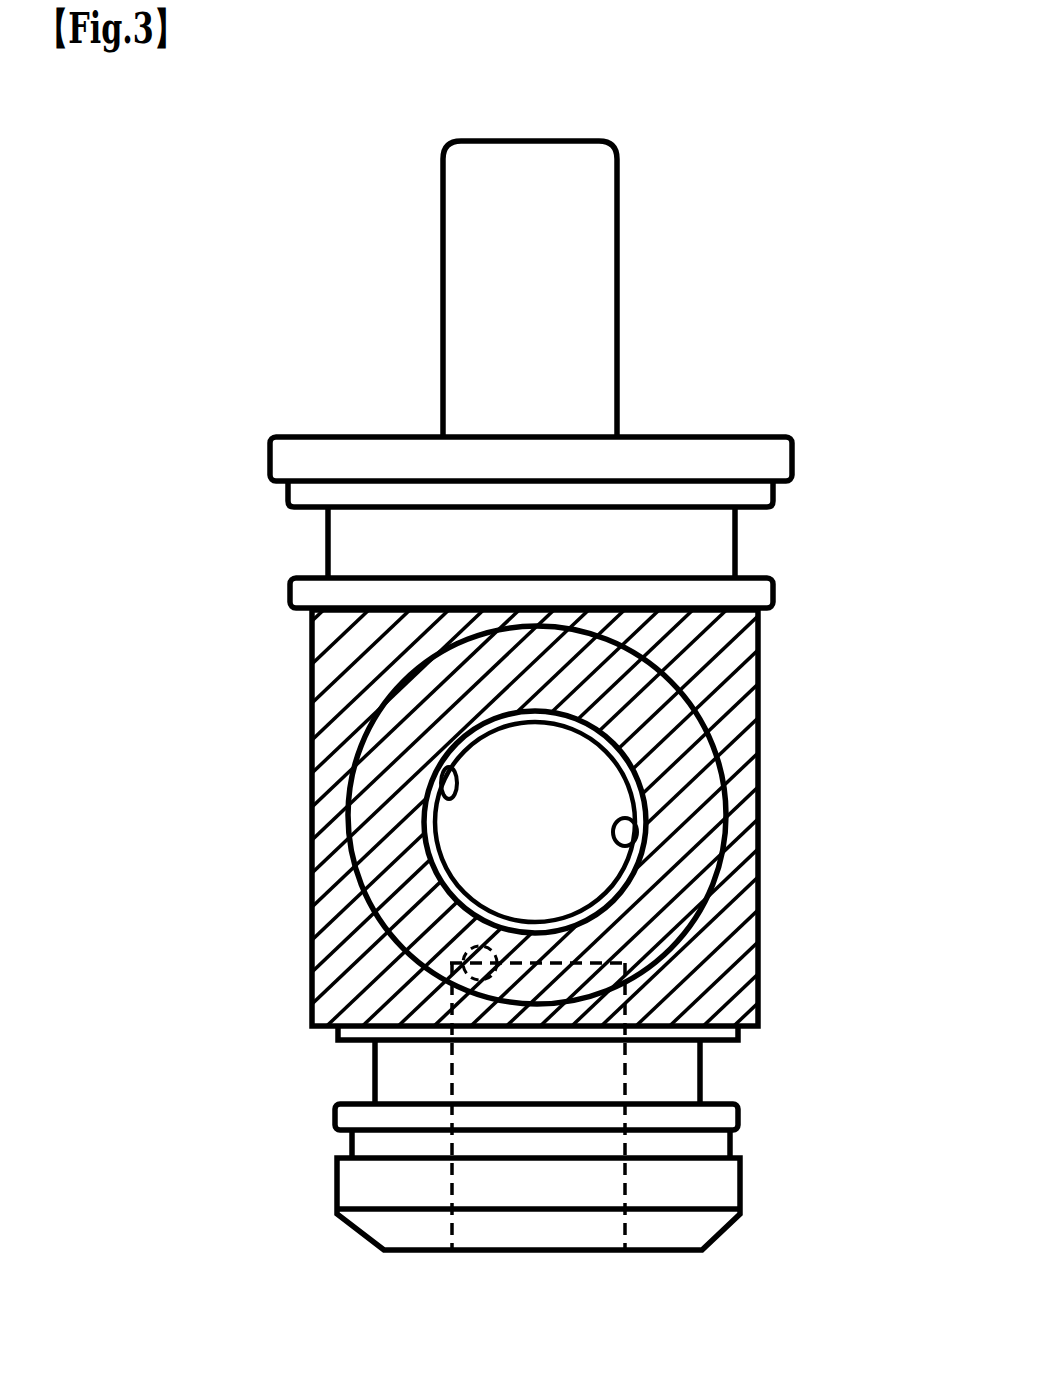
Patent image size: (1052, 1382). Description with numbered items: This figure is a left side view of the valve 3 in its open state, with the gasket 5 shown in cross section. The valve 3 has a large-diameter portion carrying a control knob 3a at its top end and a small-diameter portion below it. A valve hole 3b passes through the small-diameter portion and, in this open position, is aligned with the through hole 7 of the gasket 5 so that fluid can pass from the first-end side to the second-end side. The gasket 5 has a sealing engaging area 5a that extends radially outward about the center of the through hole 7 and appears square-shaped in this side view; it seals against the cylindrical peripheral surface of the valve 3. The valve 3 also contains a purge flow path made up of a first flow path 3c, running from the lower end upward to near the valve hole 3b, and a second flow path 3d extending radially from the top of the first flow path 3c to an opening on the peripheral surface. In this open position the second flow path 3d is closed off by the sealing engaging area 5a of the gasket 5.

The valve 3 is at (708, 433).
The control knob 3a is at (585, 262).
The valve hole 3b is at (445, 790).
The first flow path 3c is at (593, 1077).
The second flow path 3d is at (440, 952).
The gasket 5 is at (677, 737).
The sealing engaging area 5a is at (312, 665).
The through hole 7 is at (630, 843).